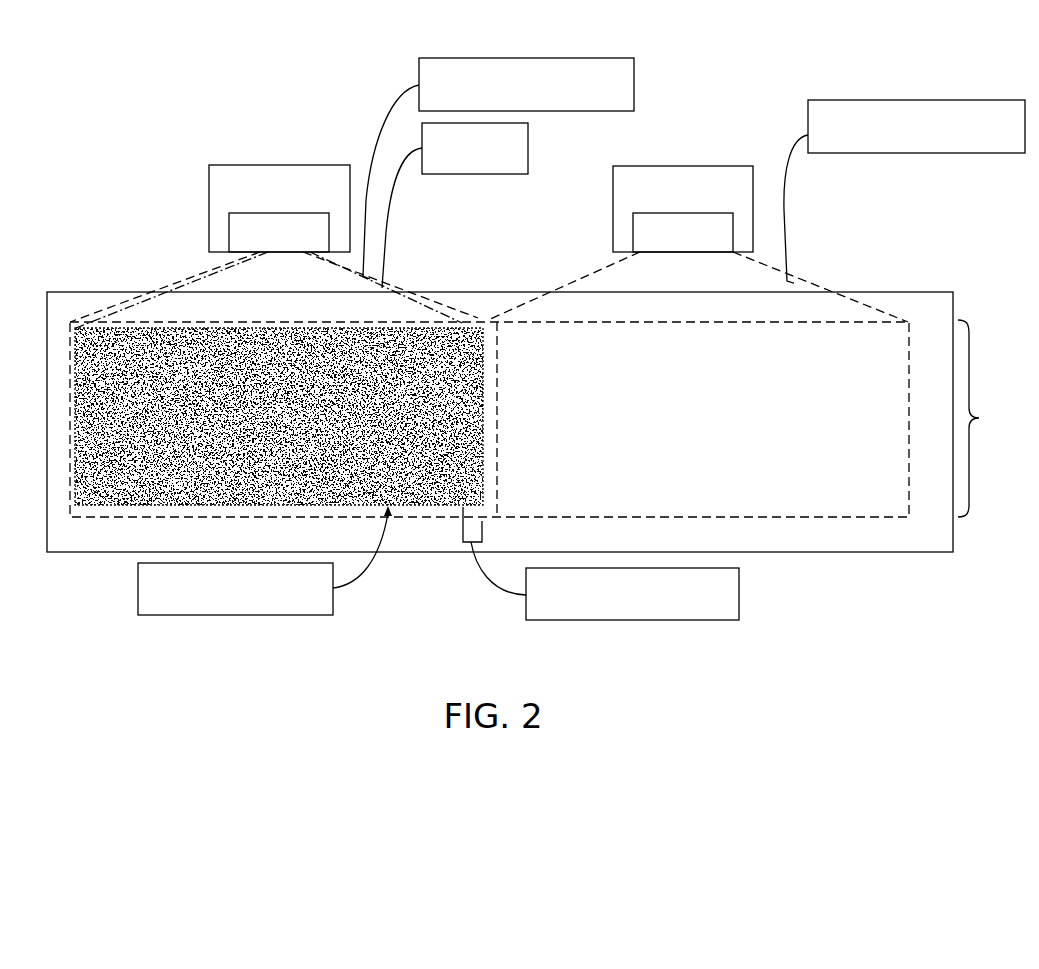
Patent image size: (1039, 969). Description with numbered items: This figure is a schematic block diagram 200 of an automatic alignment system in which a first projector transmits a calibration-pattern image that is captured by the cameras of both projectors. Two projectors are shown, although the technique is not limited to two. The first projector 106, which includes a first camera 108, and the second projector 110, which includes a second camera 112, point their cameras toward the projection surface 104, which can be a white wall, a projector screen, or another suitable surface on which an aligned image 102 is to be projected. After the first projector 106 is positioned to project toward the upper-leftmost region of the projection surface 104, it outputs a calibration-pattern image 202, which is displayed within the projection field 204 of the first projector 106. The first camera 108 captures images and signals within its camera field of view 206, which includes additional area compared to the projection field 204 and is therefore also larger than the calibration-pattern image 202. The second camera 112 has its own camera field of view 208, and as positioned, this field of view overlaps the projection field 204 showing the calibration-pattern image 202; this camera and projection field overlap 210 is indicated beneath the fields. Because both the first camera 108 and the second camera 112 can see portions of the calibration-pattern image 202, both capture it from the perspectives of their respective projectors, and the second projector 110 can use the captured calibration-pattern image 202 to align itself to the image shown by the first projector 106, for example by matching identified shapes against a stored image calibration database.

The aligned image 102 is at (543, 418).
The projection surface 104 is at (904, 292).
The projector 1 106 is at (246, 165).
The camera 1 108 is at (229, 231).
The projector 2 110 is at (640, 166).
The camera 2 112 is at (633, 232).
The schematic block diagram 200 is at (512, 684).
The calibration-pattern image 202 is at (283, 615).
The projection field 204 is at (475, 174).
The camera 1 field of view 206 is at (455, 58).
The camera 2 field of view 208 is at (852, 100).
The camera and projection field overlap 210 is at (699, 620).